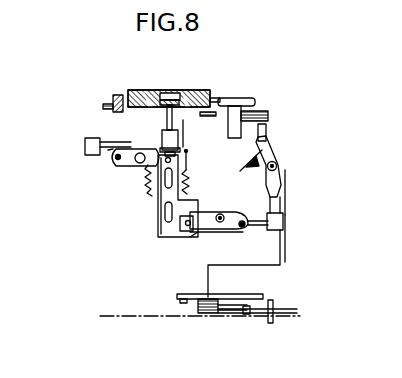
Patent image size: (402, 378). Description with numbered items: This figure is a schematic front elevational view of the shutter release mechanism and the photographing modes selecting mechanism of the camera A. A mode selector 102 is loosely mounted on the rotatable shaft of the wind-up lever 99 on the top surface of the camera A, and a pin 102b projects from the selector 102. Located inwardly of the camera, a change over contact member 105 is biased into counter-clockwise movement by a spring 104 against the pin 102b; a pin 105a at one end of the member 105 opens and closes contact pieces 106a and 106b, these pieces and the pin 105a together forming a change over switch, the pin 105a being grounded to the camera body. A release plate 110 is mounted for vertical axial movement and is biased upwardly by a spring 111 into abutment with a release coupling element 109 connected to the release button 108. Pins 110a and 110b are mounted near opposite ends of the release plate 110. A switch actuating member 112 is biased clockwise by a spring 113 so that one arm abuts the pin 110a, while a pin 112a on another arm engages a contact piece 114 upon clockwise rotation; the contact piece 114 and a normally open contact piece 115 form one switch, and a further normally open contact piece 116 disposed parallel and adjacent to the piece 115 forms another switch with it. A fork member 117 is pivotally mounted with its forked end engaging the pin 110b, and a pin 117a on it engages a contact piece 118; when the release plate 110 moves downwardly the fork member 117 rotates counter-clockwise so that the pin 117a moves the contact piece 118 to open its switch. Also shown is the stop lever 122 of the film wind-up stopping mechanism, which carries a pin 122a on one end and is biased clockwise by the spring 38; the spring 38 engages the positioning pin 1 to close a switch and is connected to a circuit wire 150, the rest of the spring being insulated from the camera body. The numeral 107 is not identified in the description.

The positioning pin 1 is at (292, 315).
The spring 38 is at (268, 318).
The wind-up lever 99 is at (237, 100).
The mode selector 102 is at (267, 121).
The pin 102b is at (266, 132).
The spring 104 is at (262, 150).
The change over contact member 105 is at (270, 160).
The pin 105a is at (284, 218).
The contact piece 106a is at (290, 243).
The contact piece 106b is at (285, 181).
The hatched plate 107 is at (130, 92).
The release button 108 is at (153, 90).
The release coupling element 109 is at (166, 118).
The release plate 110 is at (157, 218).
The pin 110a is at (179, 138).
The pin 110b is at (190, 236).
The spring 111 is at (198, 172).
The switch actuating member 112 is at (147, 172).
The pin 112a is at (80, 170).
The spring 113 is at (156, 190).
The contact piece 114 is at (110, 157).
The contact piece 115 is at (91, 140).
The contact piece 116 is at (116, 142).
The fork member 117 is at (209, 234).
The pin 117a is at (250, 233).
The contact piece 118 is at (255, 211).
The stop lever 122 is at (180, 297).
The pin 122a is at (184, 302).
The circuit wire 150 is at (284, 264).
The camera A is at (72, 230).